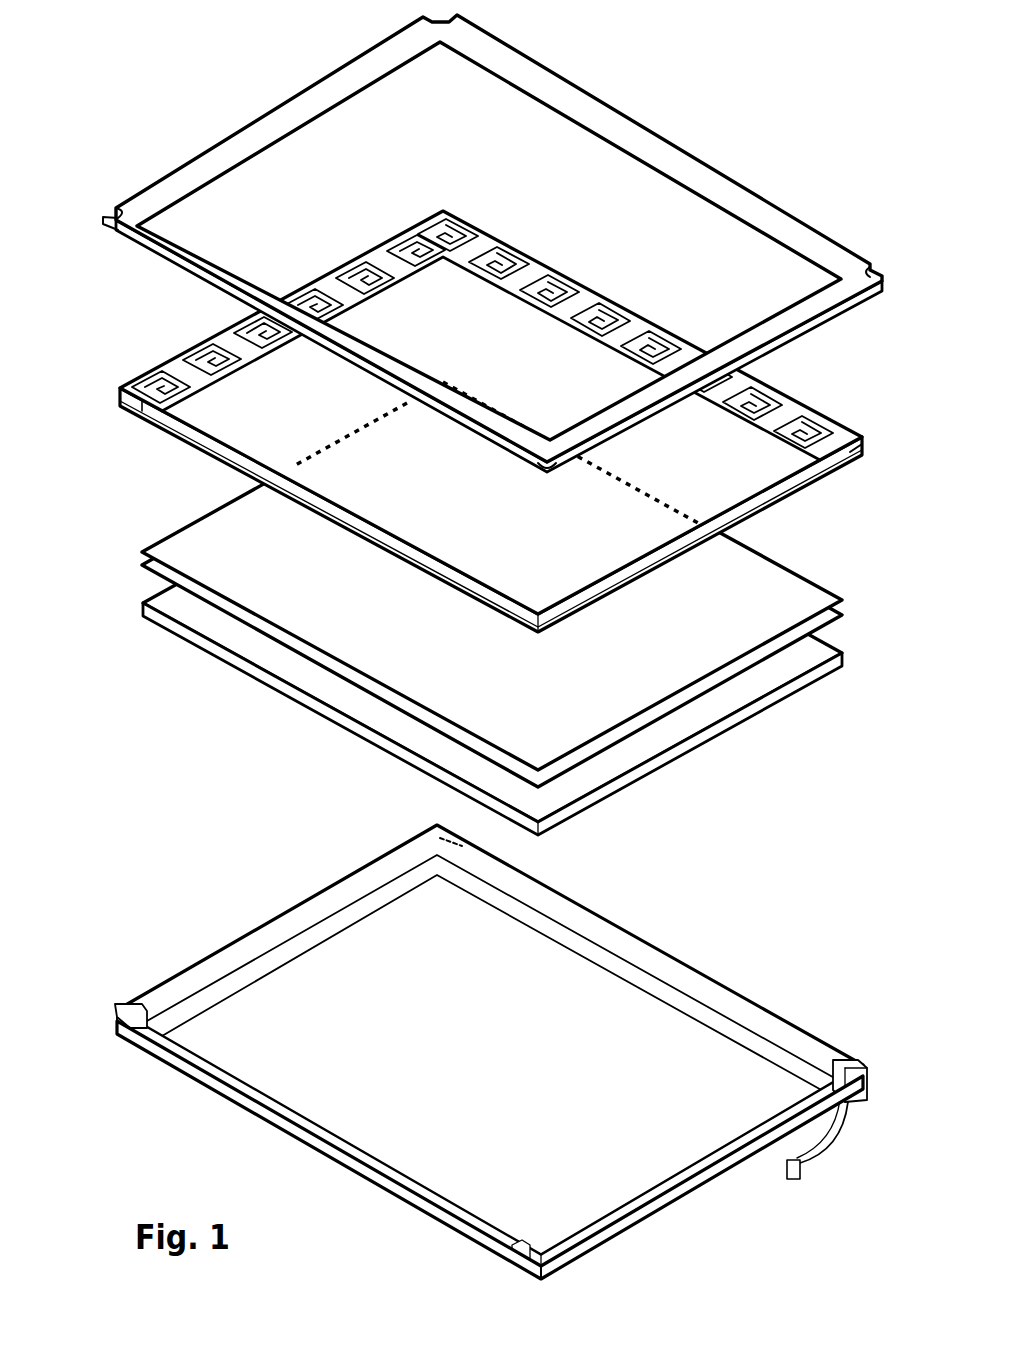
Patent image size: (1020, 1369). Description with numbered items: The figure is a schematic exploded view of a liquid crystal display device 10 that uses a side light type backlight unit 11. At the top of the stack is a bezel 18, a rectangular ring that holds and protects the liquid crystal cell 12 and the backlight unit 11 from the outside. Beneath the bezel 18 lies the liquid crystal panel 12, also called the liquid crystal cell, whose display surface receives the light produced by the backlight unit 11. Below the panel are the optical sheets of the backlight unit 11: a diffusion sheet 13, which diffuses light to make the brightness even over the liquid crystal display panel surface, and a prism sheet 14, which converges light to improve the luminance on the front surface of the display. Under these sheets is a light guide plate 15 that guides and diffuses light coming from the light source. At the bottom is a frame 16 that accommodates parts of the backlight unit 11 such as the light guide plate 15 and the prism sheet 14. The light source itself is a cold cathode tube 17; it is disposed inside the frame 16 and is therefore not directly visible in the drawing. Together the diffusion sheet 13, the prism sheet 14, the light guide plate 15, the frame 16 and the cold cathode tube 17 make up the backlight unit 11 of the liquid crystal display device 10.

The liquid crystal display device 10 is at (685, 76).
The backlight unit 11 is at (83, 1188).
The liquid crystal panel 12 is at (813, 411).
The diffusion sheet 13 is at (826, 593).
The prism sheet 14 is at (830, 623).
The light guide plate 15 is at (812, 679).
The frame 16 is at (666, 1182).
The cold cathode tube 17 is at (813, 1031).
The bezel 18 is at (816, 234).